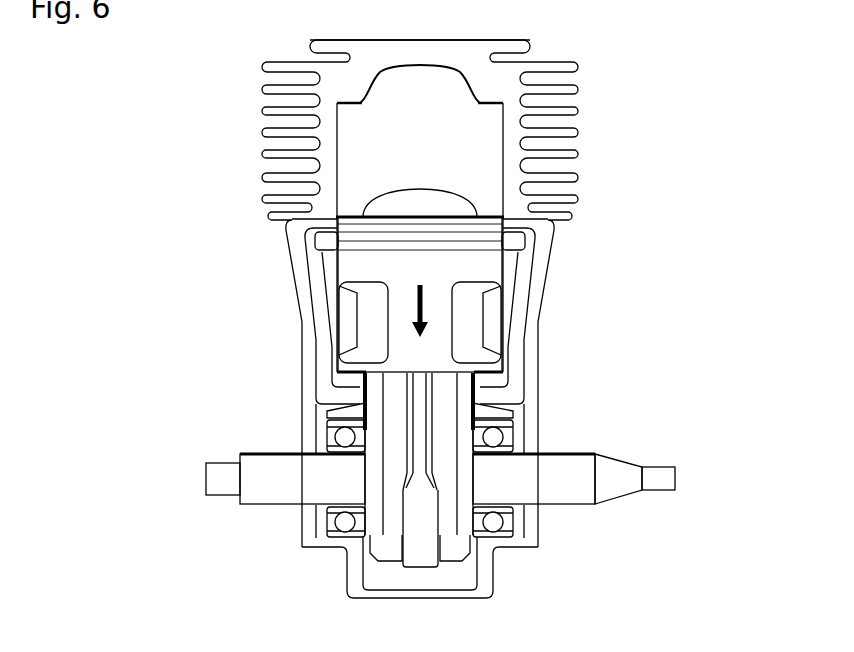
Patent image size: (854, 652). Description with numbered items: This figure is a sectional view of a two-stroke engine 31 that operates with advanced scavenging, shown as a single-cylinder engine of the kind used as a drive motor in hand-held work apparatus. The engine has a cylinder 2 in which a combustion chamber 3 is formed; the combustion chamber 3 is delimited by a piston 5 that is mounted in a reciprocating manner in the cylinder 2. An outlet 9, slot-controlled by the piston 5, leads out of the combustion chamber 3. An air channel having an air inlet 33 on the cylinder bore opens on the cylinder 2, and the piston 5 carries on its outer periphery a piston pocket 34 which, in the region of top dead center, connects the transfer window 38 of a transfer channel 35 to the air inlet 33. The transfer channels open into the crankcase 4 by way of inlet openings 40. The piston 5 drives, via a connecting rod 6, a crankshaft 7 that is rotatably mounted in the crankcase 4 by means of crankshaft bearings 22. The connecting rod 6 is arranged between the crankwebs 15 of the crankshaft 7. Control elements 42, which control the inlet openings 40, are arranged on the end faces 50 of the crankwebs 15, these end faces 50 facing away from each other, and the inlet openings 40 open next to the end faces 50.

The two-stroke engine 31 is at (640, 54).
The cylinder 2 is at (327, 133).
The combustion chamber 3 is at (378, 137).
The outlet 9 is at (457, 192).
The transfer window 38 is at (337, 220).
The piston 5 is at (477, 263).
The air inlet 33 is at (323, 243).
The transfer channel 35 is at (300, 265).
The piston pocket 34 is at (370, 322).
The inlet opening 40 is at (357, 397).
The control element 42 is at (328, 410).
The end face 50 is at (327, 437).
The crankshaft 7 is at (280, 490).
The connecting rod 6 is at (422, 555).
The crankshaft bearing 22 is at (345, 533).
The crankweb 15 is at (373, 503).
The crankcase 4 is at (487, 578).